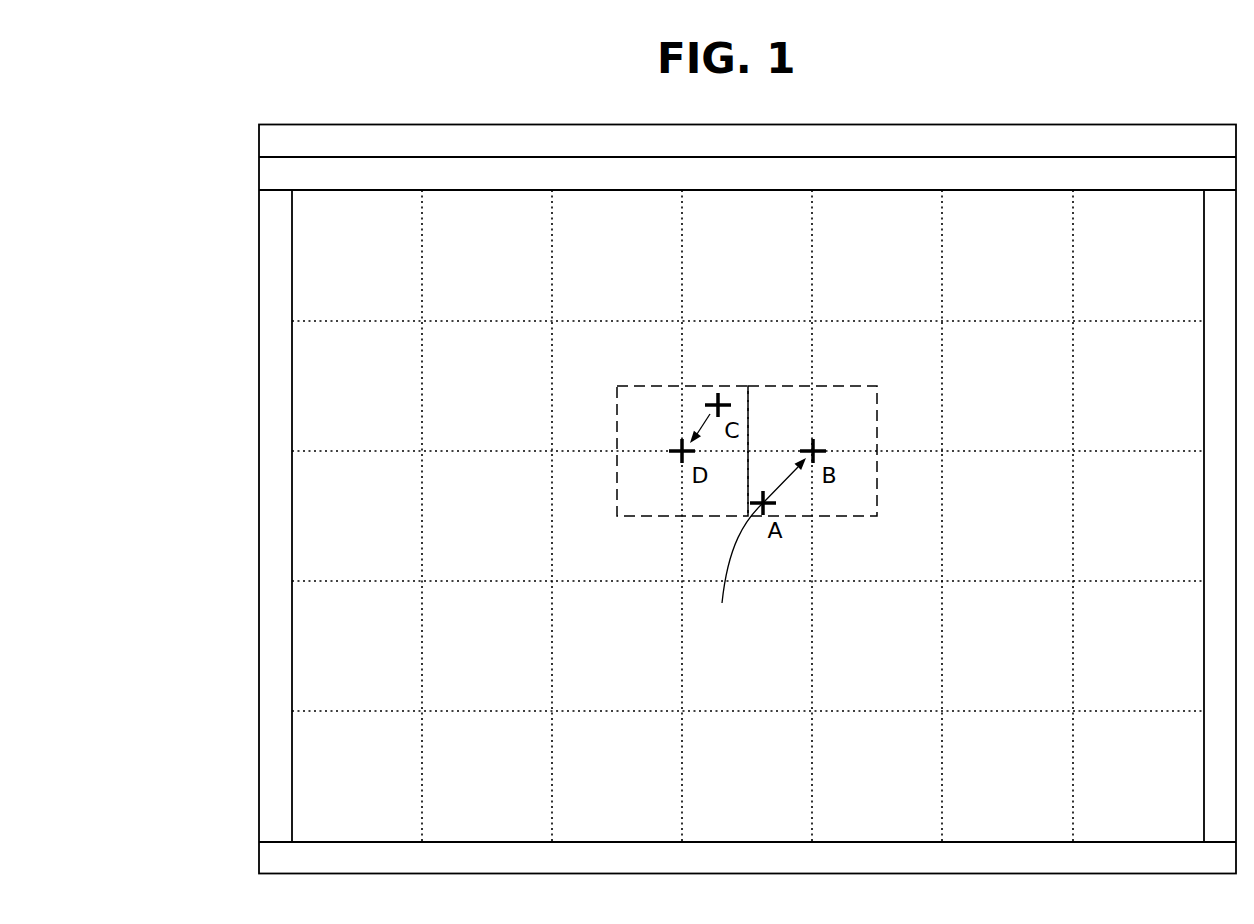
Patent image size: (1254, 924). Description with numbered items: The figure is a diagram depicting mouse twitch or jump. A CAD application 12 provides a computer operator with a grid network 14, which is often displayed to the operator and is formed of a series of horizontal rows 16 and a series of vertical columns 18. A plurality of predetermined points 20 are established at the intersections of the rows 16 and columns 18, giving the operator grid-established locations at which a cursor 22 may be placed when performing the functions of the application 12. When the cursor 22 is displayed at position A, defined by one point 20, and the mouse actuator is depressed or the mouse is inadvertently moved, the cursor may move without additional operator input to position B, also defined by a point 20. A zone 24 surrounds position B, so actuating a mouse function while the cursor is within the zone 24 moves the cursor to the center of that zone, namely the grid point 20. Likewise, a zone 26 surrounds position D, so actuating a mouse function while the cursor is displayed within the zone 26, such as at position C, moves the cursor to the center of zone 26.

The CAD application 12 is at (196, 154).
The grid network 14 is at (228, 318).
The horizontal rows 16 is at (682, 557).
The vertical columns 18 is at (500, 450).
The predetermined points 20 is at (813, 451).
The cursor 22 is at (758, 548).
The zone 24 is at (877, 465).
The zone 26 is at (667, 386).